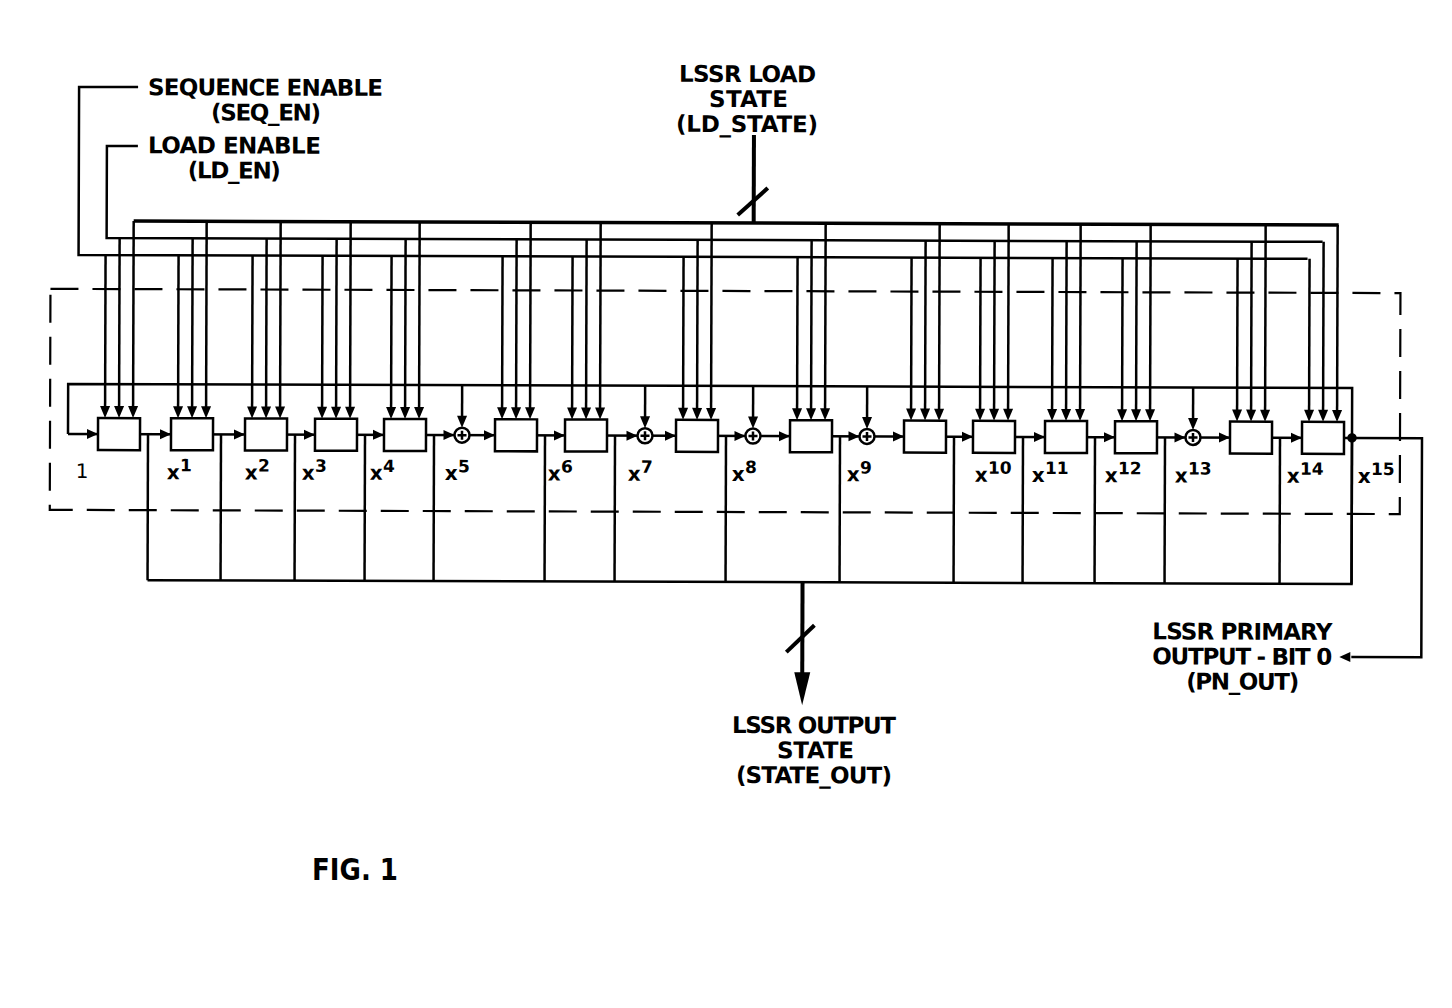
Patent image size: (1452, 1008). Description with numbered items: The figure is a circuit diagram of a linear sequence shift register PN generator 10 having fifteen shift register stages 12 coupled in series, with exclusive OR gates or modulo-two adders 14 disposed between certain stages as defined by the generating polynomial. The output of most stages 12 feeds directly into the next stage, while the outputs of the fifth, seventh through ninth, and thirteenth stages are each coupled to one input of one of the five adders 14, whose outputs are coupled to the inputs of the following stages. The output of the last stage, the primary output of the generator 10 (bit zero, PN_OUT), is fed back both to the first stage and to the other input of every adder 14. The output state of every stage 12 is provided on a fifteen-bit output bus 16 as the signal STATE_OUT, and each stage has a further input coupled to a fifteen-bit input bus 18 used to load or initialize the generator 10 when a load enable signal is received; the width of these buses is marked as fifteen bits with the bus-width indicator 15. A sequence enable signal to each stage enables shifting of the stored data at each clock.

The linear sequence shift register PN generator 10 is at (1352, 281).
The shift register stage 12 is at (112, 452).
The modulo-2 adder 14 is at (468, 440).
The bus width indicator (15 bits) 15 is at (765, 417).
The output bus 16 is at (803, 605).
The input bus 18 is at (753, 166).